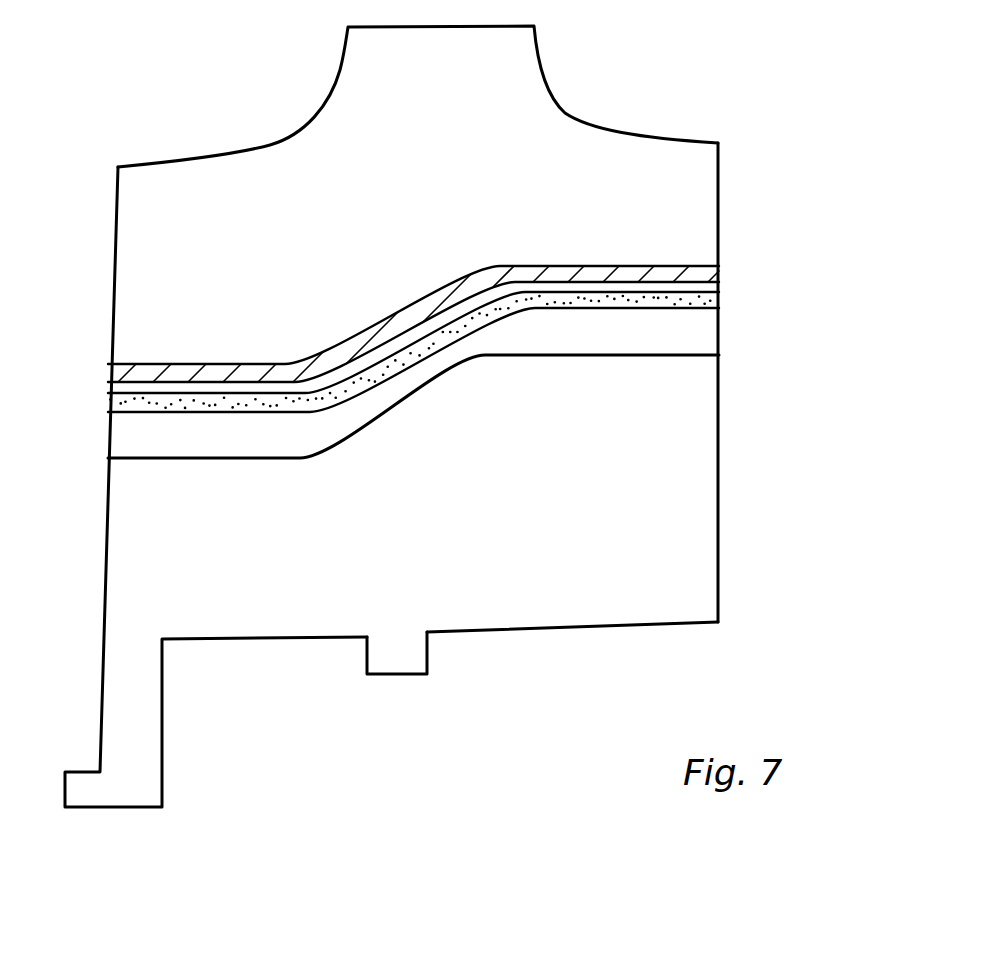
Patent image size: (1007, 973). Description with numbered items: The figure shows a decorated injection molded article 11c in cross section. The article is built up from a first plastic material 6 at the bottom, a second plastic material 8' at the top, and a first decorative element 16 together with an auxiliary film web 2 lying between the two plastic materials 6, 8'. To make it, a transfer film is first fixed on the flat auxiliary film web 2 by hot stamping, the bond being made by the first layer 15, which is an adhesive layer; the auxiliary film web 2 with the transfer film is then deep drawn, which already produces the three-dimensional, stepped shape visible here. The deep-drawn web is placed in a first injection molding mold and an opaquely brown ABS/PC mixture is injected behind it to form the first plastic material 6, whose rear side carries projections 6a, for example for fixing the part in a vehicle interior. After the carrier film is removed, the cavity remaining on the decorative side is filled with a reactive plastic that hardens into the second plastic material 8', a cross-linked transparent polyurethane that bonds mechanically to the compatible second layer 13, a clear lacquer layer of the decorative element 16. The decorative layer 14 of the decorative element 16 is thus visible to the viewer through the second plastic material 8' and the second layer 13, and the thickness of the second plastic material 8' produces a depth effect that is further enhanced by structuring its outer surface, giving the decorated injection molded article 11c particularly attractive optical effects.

The auxiliary film web 2 is at (123, 440).
The first plastic material 6 is at (677, 487).
The projections 6a is at (388, 657).
The second plastic material 8' is at (457, 108).
The decorated injection molded article 11c is at (718, 590).
The second layer 13 is at (710, 272).
The decorative layer 14 is at (720, 284).
The first layer 15 is at (720, 298).
The decorative element 16 is at (108, 367).